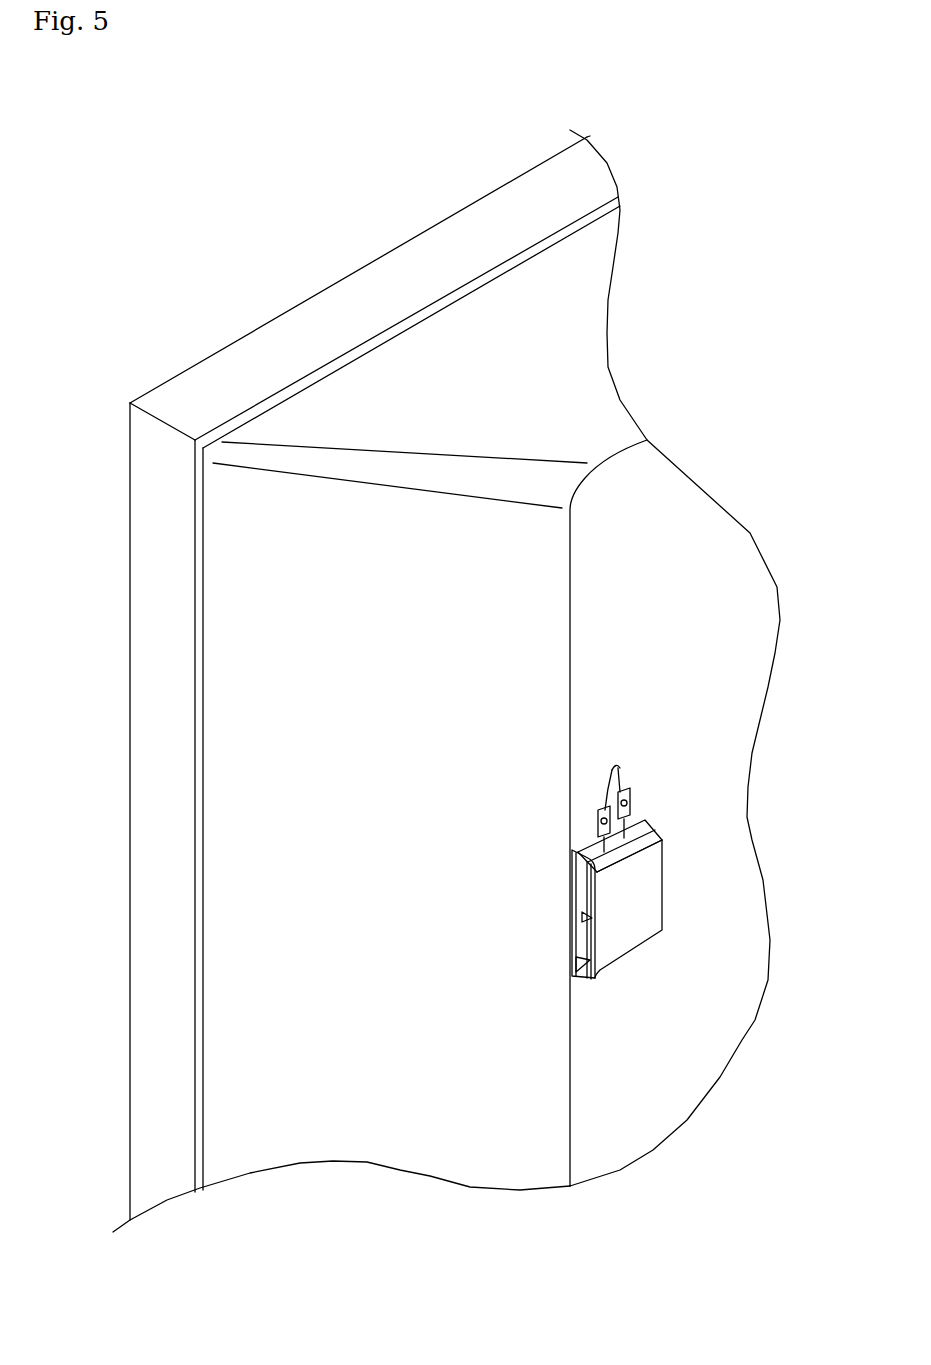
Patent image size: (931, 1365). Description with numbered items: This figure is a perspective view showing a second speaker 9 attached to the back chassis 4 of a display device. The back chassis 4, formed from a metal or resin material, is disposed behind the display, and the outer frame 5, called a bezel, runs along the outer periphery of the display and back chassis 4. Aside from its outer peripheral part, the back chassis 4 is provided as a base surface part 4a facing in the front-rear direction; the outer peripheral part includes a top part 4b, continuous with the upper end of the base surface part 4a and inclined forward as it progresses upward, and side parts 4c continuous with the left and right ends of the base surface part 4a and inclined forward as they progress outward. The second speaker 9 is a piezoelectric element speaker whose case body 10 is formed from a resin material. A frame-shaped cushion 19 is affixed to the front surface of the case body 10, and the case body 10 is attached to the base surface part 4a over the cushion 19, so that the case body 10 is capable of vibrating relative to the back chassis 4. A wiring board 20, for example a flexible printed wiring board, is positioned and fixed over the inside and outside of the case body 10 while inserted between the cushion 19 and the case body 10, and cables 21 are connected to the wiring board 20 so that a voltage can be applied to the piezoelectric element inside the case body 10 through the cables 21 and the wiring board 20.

The back chassis 4 is at (740, 573).
The base surface part 4a is at (742, 592).
The top part 4b is at (580, 368).
The side part 4c is at (340, 1133).
The outer frame 5 is at (297, 328).
The second speaker 9 is at (650, 888).
The case body 10 is at (652, 910).
The cushion 19 is at (650, 822).
The wiring board 20 is at (647, 813).
The cables 21 is at (600, 775).